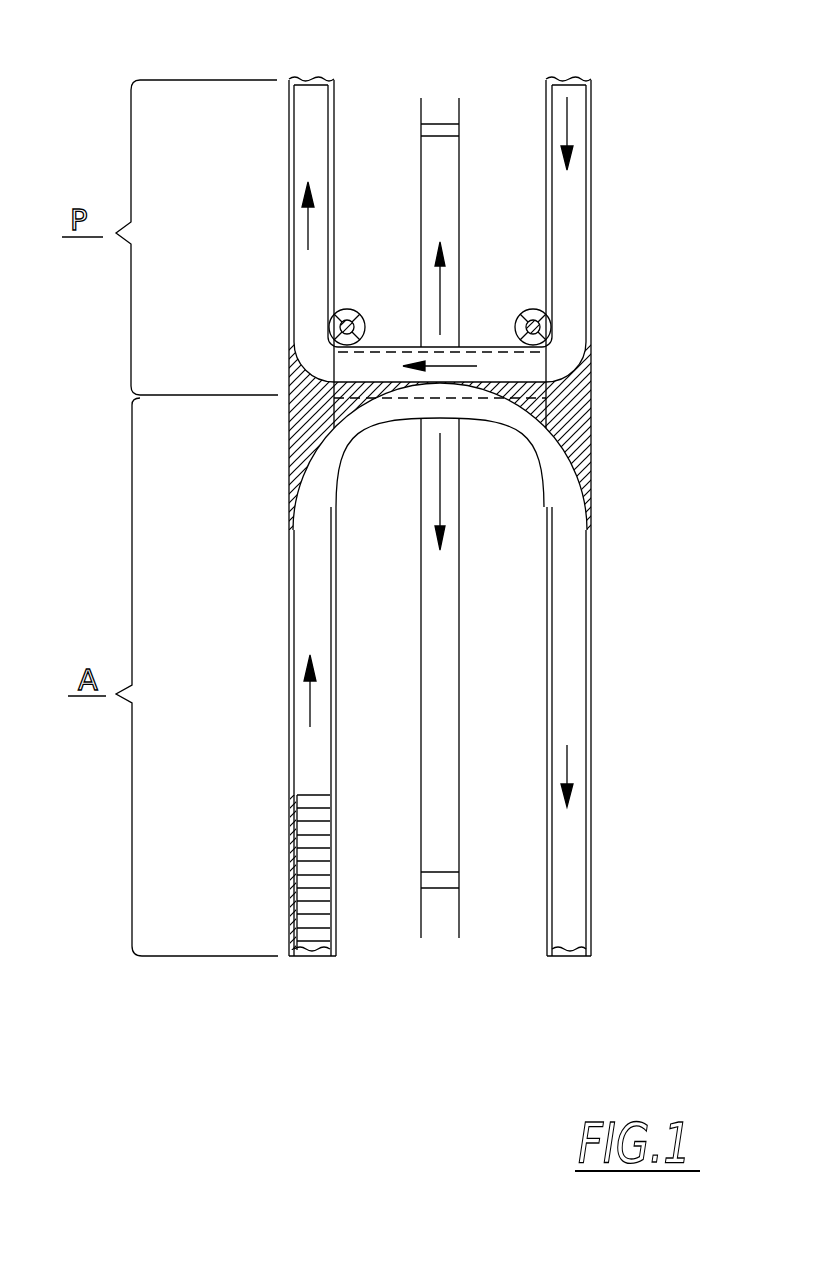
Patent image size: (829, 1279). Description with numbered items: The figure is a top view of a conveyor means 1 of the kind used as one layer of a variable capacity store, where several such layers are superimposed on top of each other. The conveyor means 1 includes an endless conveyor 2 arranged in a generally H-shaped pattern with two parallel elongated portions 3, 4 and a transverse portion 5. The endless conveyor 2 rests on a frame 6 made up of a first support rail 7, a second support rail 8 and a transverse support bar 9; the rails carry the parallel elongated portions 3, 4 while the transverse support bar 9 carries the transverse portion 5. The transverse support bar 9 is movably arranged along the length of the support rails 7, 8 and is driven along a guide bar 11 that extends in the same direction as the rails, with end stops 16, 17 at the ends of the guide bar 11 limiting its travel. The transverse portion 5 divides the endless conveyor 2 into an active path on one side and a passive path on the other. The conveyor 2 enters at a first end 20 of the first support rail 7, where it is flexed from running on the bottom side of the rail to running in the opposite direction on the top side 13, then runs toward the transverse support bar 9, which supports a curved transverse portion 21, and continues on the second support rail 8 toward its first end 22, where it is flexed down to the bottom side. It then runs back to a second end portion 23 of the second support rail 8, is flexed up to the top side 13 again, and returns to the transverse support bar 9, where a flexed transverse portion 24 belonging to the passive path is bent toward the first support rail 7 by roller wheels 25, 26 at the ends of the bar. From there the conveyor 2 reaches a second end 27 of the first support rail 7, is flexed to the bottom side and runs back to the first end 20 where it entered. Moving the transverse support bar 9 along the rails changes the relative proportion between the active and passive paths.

The conveyor means 1 is at (652, 438).
The endless conveyor 2 is at (578, 681).
The first parallel elongated portion 3 is at (315, 636).
The second parallel elongated portion 4 is at (578, 634).
The transverse portion 5 is at (486, 327).
The frame 6 is at (332, 195).
The first support rail 7 is at (578, 456).
The second support rail 8 is at (300, 473).
The transverse support bar 9 is at (542, 390).
The guide bar 11 is at (447, 805).
The top side 13 is at (320, 903).
The end stop 16 is at (457, 882).
The end stop 17 is at (460, 130).
The first end of the first support rail 20 is at (337, 928).
The curved transverse portion 21 is at (488, 424).
The first end of the second support rail 22 is at (578, 893).
The second end portion of the second support rail 23 is at (592, 116).
The flexed transverse portion 24 is at (333, 313).
The roller wheel 25 is at (325, 303).
The roller wheel 26 is at (548, 314).
The second end of the first support rail 27 is at (332, 138).